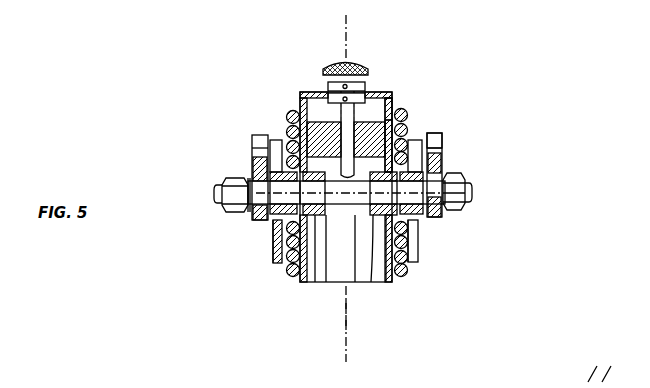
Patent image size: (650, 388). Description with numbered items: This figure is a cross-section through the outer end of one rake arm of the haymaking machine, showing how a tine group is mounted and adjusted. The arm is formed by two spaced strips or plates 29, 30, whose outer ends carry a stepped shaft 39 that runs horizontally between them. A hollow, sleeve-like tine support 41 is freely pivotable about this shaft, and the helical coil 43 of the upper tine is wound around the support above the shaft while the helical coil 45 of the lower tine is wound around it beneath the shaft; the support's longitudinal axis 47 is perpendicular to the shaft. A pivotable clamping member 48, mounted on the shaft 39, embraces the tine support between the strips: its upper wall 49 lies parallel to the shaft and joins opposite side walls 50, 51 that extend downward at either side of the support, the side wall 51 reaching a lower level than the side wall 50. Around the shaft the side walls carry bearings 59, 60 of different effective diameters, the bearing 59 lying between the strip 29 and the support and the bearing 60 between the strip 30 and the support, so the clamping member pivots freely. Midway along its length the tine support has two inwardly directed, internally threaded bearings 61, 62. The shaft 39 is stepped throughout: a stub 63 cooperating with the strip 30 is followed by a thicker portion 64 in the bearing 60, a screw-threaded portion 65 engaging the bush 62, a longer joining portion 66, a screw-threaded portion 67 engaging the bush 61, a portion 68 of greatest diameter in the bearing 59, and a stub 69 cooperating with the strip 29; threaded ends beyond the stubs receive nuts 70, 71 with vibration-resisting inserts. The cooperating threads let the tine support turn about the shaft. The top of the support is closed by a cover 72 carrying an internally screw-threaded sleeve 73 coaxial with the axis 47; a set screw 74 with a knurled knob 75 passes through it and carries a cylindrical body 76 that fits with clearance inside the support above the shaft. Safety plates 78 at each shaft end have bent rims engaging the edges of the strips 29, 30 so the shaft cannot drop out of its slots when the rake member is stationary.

The strip or plate 29 is at (433, 135).
The strip or plate 30 is at (260, 134).
The shaft 39 is at (218, 193).
The tine support 41 is at (405, 101).
The helical coil 43 is at (408, 116).
The helical coil 45 is at (408, 272).
The longitudinal axis 47 is at (348, 353).
The pivotable clamping member 48 is at (271, 253).
The upper wall 49 is at (407, 137).
The side wall 50 is at (413, 232).
The side wall 51 is at (282, 265).
The bearing 59 is at (418, 222).
The bearing 60 is at (287, 206).
The bearing 61 is at (386, 283).
The bearing 62 is at (316, 285).
The stub 63 is at (232, 208).
The thicker portion 64 is at (262, 222).
The externally screw-threaded portion 65 is at (318, 240).
The joining portion 66 is at (341, 204).
The externally screw-threaded portion 67 is at (358, 280).
The portion of greatest diameter 68 is at (447, 158).
The stub 69 is at (463, 177).
The nut 70 is at (235, 185).
The nut 71 is at (466, 203).
The cover 72 is at (393, 98).
The internally screw-threaded sleeve 73 is at (328, 85).
The set screw 74 is at (366, 100).
The knurled knob 75 is at (346, 60).
The cylindrical mass or body 76 is at (310, 100).
The safety plate 78 is at (252, 147).